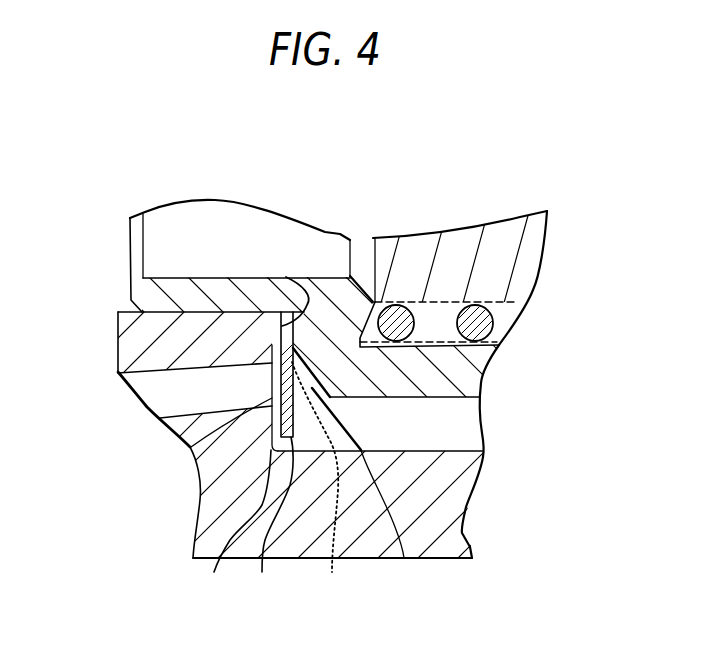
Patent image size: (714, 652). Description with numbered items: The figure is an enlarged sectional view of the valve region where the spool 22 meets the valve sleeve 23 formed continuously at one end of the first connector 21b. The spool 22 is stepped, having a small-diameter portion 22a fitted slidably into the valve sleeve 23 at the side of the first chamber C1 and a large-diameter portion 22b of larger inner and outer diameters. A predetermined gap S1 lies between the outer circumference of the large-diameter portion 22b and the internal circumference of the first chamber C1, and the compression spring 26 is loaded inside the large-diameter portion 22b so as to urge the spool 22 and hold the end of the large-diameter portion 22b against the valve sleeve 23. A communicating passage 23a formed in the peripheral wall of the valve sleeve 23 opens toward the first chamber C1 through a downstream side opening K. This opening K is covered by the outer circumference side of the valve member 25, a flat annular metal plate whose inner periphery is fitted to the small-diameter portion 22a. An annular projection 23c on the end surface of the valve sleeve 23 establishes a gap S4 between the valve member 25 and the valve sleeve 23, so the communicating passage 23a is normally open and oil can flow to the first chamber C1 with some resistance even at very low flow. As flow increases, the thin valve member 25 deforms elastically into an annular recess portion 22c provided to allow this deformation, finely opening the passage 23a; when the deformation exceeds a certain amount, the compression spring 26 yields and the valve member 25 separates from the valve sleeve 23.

The spool 22 is at (309, 241).
The small-diameter portion 22a is at (188, 293).
The large-diameter portion 22b is at (446, 391).
The annular recess portion 22c is at (404, 558).
The valve sleeve 23 is at (150, 358).
The communicating passage 23a is at (167, 397).
The annular projection 23c is at (286, 277).
The valve member 25 is at (300, 484).
The compression spring 26 is at (481, 326).
The first connector 21b is at (435, 530).
The downstream side opening K is at (191, 447).
The gap S1 is at (449, 436).
The gap S4 is at (233, 530).
The first chamber C1 is at (467, 422).